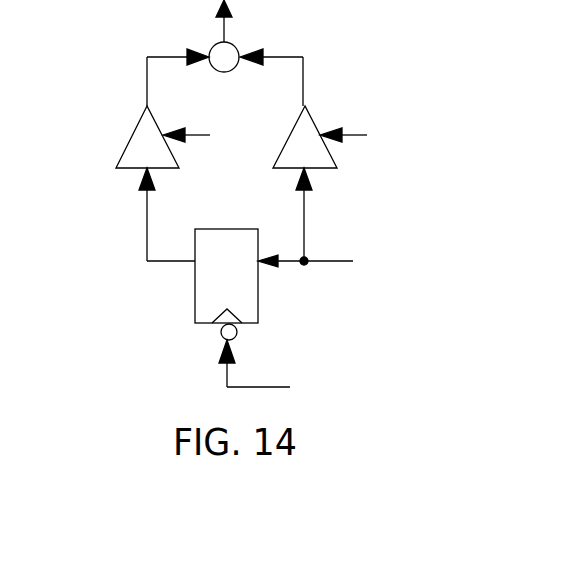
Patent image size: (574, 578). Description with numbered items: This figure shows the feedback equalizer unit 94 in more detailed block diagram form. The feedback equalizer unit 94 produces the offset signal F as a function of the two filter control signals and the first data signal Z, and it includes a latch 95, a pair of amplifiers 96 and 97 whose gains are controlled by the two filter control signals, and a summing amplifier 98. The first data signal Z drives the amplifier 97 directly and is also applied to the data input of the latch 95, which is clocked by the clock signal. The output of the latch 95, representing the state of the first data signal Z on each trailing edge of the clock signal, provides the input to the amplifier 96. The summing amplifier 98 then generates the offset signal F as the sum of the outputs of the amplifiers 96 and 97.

The feedback equalizer unit 94 is at (160, 305).
The latch 95 is at (226, 284).
The amplifier 96 is at (169, 137).
The amplifier 97 is at (326, 137).
The summing amplifier 98 is at (216, 41).